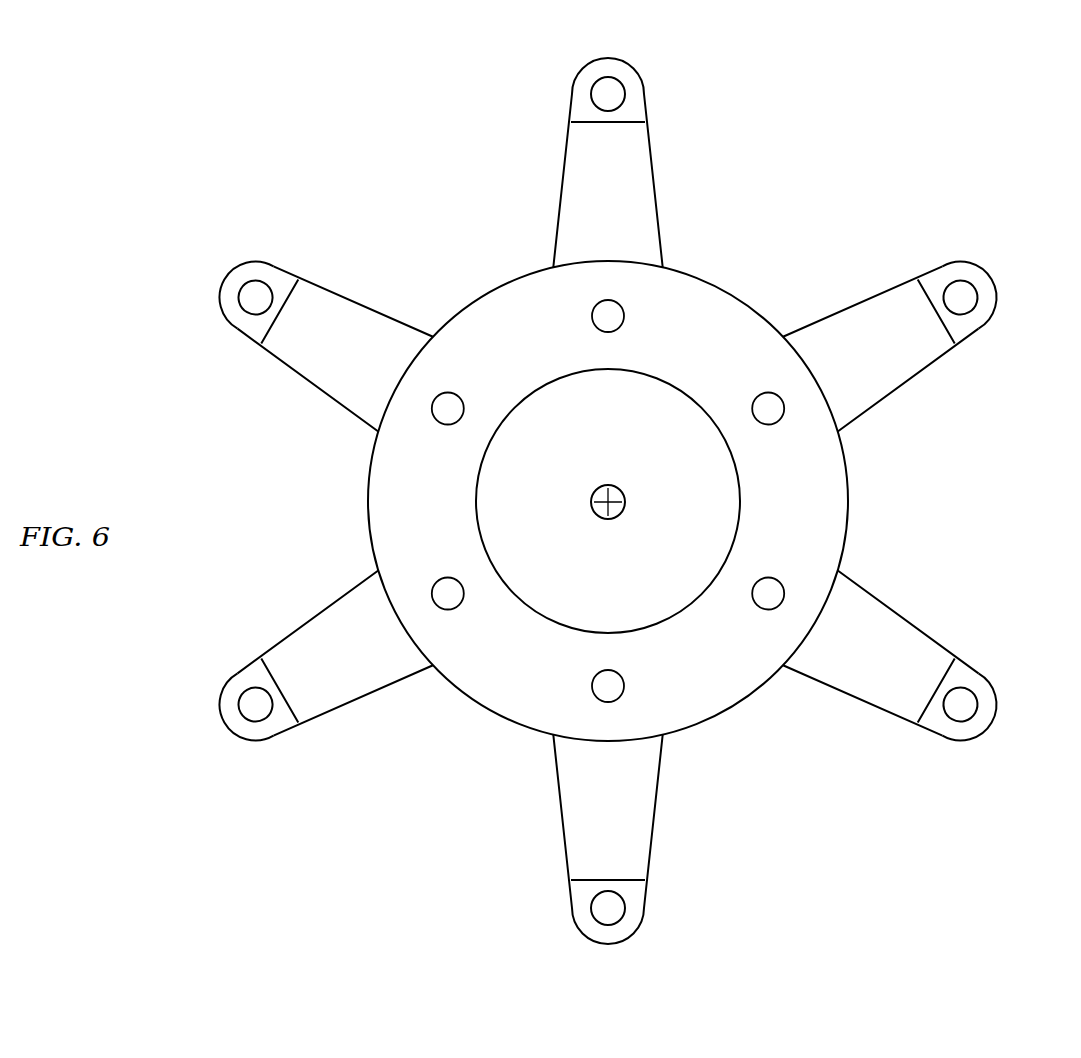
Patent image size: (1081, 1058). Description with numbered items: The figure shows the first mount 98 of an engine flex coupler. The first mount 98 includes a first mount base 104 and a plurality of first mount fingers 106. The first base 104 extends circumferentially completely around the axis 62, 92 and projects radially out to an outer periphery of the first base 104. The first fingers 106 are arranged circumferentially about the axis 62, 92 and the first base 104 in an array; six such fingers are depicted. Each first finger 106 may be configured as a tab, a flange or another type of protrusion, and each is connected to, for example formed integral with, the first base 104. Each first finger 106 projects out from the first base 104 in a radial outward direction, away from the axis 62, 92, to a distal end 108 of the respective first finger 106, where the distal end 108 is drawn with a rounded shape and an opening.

The first mount 98 is at (895, 123).
The first mount base 104 is at (860, 497).
The first mount fingers 106 is at (552, 156).
The distal end 108 is at (613, 57).
The axis 62 is at (622, 545).
The axis 92 is at (612, 503).